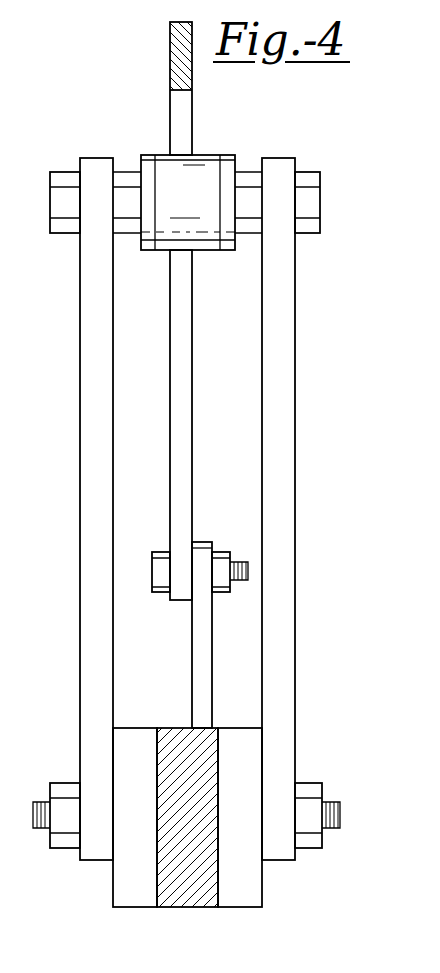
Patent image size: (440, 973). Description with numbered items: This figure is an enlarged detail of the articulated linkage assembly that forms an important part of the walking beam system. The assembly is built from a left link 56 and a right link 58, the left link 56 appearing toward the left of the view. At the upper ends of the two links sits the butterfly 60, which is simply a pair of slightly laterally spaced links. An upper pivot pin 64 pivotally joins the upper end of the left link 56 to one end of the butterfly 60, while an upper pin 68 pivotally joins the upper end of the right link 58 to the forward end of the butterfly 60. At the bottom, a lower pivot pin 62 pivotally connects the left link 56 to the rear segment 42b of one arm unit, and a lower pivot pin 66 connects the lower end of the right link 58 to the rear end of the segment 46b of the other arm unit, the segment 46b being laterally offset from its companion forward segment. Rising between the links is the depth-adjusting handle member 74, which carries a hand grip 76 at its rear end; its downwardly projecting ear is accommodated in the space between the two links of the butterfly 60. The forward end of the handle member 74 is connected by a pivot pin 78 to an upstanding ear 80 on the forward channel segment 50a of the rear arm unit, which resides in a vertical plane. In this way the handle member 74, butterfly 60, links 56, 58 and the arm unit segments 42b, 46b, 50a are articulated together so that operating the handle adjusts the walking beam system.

The hand grip 76 is at (170, 57).
The butterfly 60 is at (210, 153).
The left link 56 is at (80, 497).
The right link 58 is at (295, 453).
The upper pivot pin 64 is at (50, 218).
The upper pin 68 is at (320, 200).
The depth-adjusting handle member 74 is at (192, 395).
The upstanding ear 80 is at (202, 542).
The pivot pin 78 is at (157, 592).
The rear segment of the arm unit 42b is at (118, 900).
The forward channel segment of the rear arm unit 50a is at (198, 908).
The rear segment of the arm unit 46b is at (253, 897).
The lower pivot pin 62 is at (33, 808).
The lower pivot pin 66 is at (340, 810).